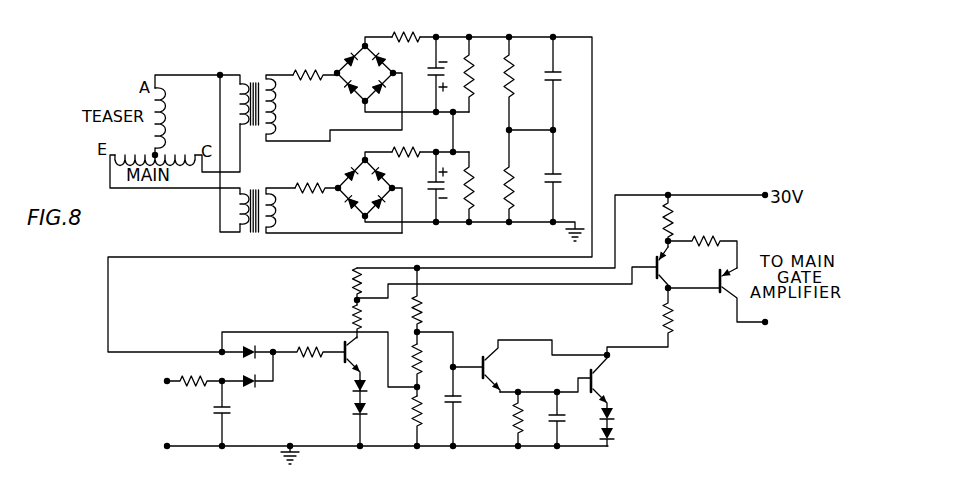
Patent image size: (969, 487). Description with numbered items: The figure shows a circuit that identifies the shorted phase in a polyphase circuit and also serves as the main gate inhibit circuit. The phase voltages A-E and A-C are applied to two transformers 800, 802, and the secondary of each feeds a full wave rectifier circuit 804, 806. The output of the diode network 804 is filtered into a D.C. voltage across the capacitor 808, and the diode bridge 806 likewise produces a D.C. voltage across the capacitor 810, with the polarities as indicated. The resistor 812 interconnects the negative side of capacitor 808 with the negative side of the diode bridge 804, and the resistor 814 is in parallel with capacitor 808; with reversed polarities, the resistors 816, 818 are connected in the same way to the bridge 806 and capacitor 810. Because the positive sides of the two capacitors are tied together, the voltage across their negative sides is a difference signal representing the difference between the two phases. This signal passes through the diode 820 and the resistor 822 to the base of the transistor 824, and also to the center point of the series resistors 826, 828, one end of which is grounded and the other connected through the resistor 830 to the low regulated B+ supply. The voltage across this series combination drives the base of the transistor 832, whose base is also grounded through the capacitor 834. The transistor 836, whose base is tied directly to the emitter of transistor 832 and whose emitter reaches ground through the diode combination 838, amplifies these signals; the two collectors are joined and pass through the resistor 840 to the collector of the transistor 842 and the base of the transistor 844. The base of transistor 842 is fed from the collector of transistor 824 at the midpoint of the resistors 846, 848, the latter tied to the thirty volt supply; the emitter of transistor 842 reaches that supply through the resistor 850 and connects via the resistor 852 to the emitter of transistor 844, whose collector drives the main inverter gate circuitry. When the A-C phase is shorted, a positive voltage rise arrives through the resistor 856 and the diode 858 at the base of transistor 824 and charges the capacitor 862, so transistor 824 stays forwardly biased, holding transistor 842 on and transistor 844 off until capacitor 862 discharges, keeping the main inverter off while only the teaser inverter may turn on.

The transformer 800 is at (267, 62).
The transformer 802 is at (257, 232).
The full wave rectifier circuit 804 is at (356, 80).
The full wave rectifier circuit 806 is at (356, 195).
The capacitor 808 is at (432, 72).
The capacitor 810 is at (432, 183).
The resistor 812 is at (416, 27).
The resistor 814 is at (474, 90).
The resistor 816 is at (405, 152).
The resistor 818 is at (474, 196).
The diode 820 is at (245, 351).
The resistor 822 is at (314, 360).
The transistor 824 is at (352, 350).
The resistor 826 is at (421, 358).
The resistor 828 is at (413, 418).
The resistor 830 is at (424, 304).
The transistor 832 is at (493, 366).
The capacitor 834 is at (458, 401).
The transistor 836 is at (603, 376).
The diode combination 838 is at (616, 416).
The resistor 840 is at (672, 324).
The transistor 842 is at (662, 273).
The transistor 844 is at (731, 273).
The resistor 846 is at (357, 316).
The resistor 848 is at (356, 281).
The resistor 850 is at (673, 213).
The resistor 852 is at (717, 238).
The resistor 856 is at (193, 375).
The diode 858 is at (252, 386).
The capacitor 862 is at (231, 412).